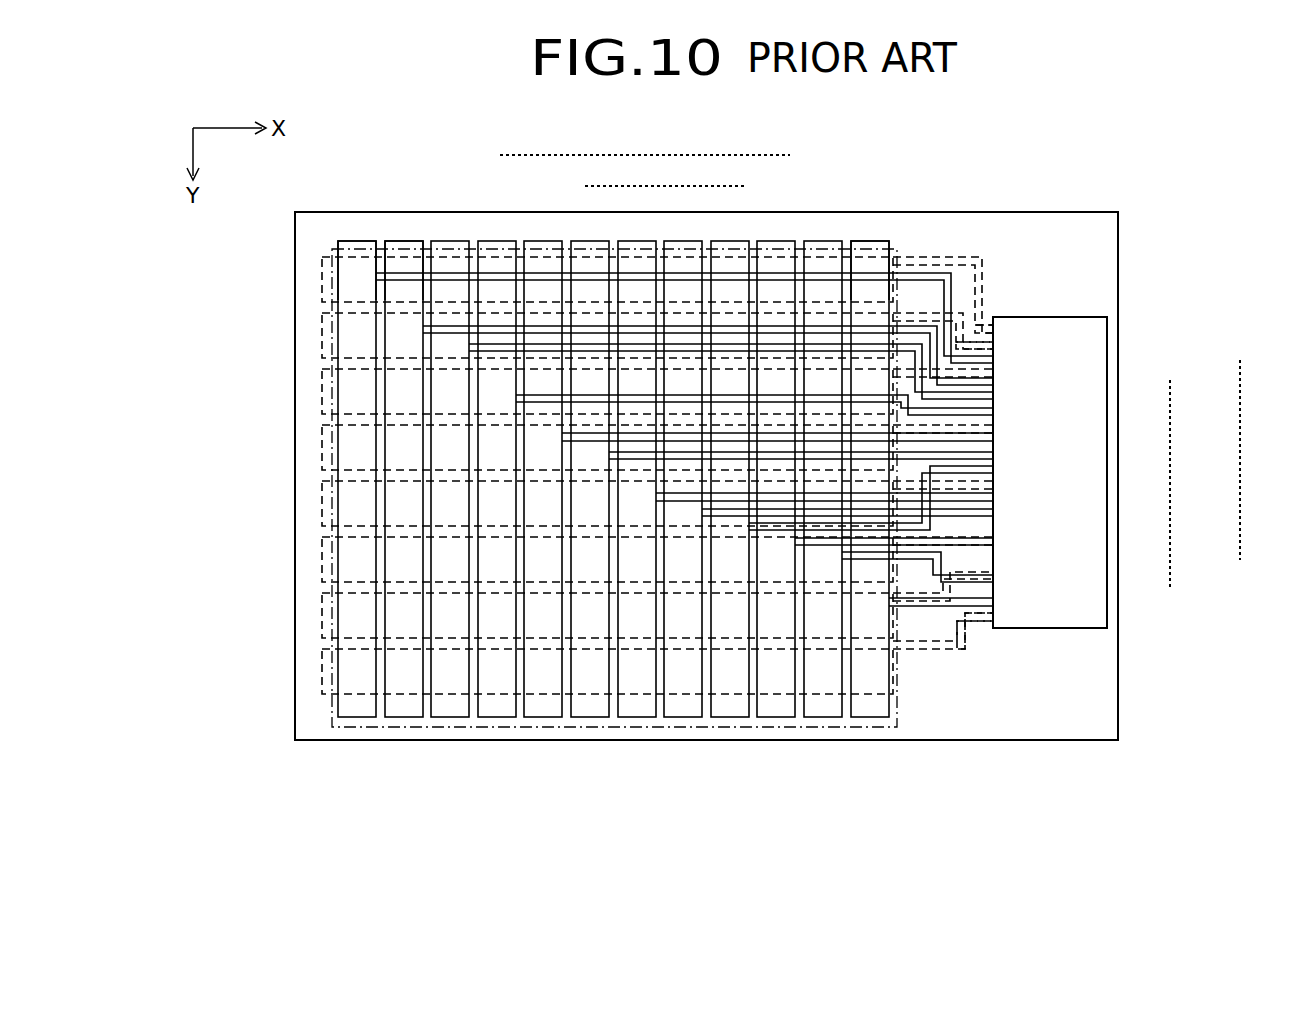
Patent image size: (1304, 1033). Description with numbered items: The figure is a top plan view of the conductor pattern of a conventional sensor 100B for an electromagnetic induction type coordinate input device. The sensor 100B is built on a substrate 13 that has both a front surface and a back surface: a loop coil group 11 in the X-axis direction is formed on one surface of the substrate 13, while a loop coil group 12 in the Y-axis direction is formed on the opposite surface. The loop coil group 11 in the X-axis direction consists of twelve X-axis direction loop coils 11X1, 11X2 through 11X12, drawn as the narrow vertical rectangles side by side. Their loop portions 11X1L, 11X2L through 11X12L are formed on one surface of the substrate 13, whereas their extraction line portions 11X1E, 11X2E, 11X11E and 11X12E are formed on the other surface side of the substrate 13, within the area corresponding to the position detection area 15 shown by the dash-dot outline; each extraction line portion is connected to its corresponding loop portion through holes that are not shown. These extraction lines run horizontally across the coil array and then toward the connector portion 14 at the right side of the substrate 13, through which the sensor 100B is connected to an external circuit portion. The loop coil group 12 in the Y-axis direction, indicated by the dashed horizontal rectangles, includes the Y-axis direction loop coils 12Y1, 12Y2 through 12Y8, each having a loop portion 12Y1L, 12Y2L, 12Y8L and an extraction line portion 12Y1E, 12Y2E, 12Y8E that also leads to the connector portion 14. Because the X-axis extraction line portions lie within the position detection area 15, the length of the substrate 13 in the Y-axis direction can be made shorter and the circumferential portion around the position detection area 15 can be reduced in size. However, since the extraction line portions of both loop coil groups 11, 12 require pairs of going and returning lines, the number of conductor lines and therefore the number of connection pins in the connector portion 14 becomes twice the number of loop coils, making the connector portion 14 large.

The sensor 100B is at (410, 121).
The substrate 13 is at (305, 233).
The connector portion 14 is at (1108, 346).
The position detection area 15 is at (325, 722).
The loop coil group in the X-axis direction 11 is at (900, 782).
The X-axis direction loop coil 11X1 is at (358, 722).
The X-axis direction loop coil 11X2 is at (400, 722).
The X-axis direction loop coil 11X12 is at (878, 722).
The loop portion 11X1L is at (345, 295).
The loop portion 11X2L is at (393, 285).
The loop portion 11X12L is at (855, 292).
The extraction line portion 11X1E is at (452, 275).
The extraction line portion 11X2E is at (542, 320).
The extraction line portion 11X11E is at (866, 555).
The extraction line portion 11X12E is at (918, 610).
The loop coil group in the Y-axis direction 12 is at (213, 263).
The Y-axis direction loop coil 12Y1 is at (323, 280).
The Y-axis direction loop coil 12Y2 is at (323, 337).
The Y-axis direction loop coil 12Y8 is at (323, 660).
The loop portion 12Y1L is at (962, 288).
The extraction line portion 12Y1E is at (960, 256).
The loop portion 12Y2L is at (985, 320).
The extraction line portion 12Y2E is at (987, 300).
The loop portion 12Y8L is at (965, 672).
The extraction line portion 12Y8E is at (967, 653).